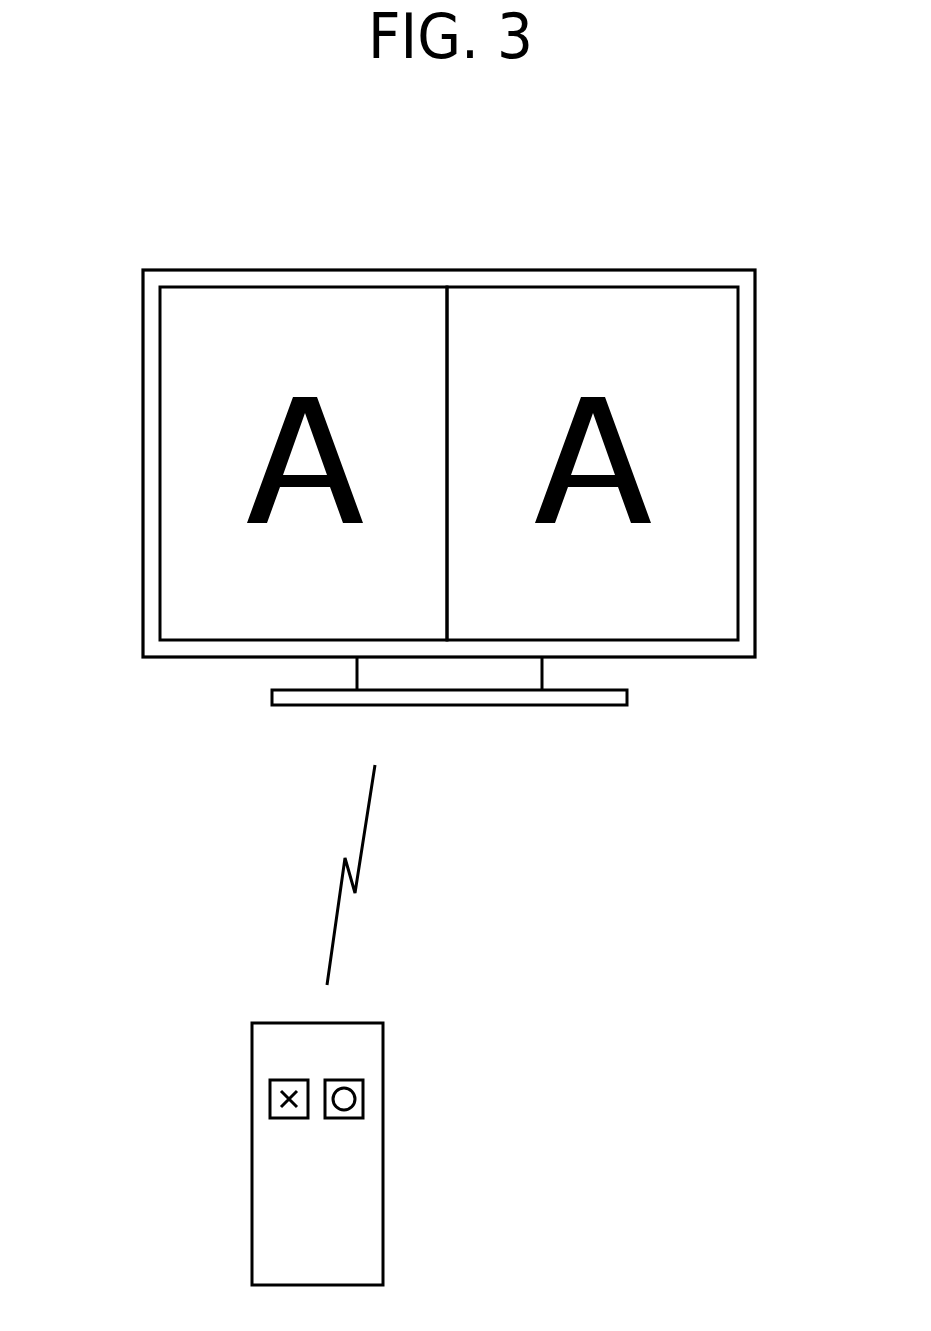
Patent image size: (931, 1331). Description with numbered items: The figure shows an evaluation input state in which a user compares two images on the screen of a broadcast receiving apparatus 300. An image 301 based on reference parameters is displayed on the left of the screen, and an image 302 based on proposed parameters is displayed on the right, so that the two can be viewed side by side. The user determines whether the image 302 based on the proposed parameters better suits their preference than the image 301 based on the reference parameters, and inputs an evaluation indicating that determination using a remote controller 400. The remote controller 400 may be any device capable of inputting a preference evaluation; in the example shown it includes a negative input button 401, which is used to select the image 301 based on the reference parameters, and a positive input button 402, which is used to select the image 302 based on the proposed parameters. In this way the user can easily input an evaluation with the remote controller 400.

The broadcast receiving apparatus 300 is at (676, 268).
The image based on reference parameters 301 is at (160, 383).
The image based on proposed parameters 302 is at (742, 382).
The remote controller 400 is at (363, 1023).
The negative input button 401 is at (270, 1092).
The positive input button 402 is at (363, 1092).